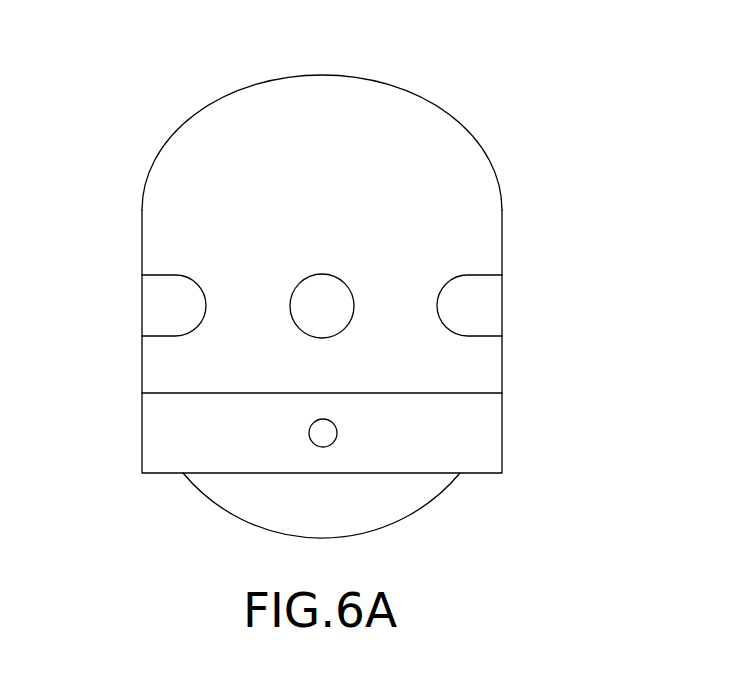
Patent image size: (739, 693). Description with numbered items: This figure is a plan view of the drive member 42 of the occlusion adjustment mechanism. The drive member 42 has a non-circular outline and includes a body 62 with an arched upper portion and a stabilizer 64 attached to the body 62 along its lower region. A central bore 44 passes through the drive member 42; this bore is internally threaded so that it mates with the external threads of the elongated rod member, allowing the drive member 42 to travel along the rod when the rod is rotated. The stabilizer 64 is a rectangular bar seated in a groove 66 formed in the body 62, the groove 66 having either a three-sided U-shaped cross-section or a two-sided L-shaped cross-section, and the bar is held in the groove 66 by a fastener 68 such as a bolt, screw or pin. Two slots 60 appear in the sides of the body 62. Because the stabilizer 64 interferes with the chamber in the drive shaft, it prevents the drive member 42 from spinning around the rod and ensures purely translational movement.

The drive member 42 is at (533, 113).
The central bore 44 is at (322, 275).
The slots 60 is at (204, 296).
The body 62 is at (188, 177).
The stabilizer 64 is at (448, 418).
The groove 66 is at (407, 473).
The fastener 68 is at (309, 432).